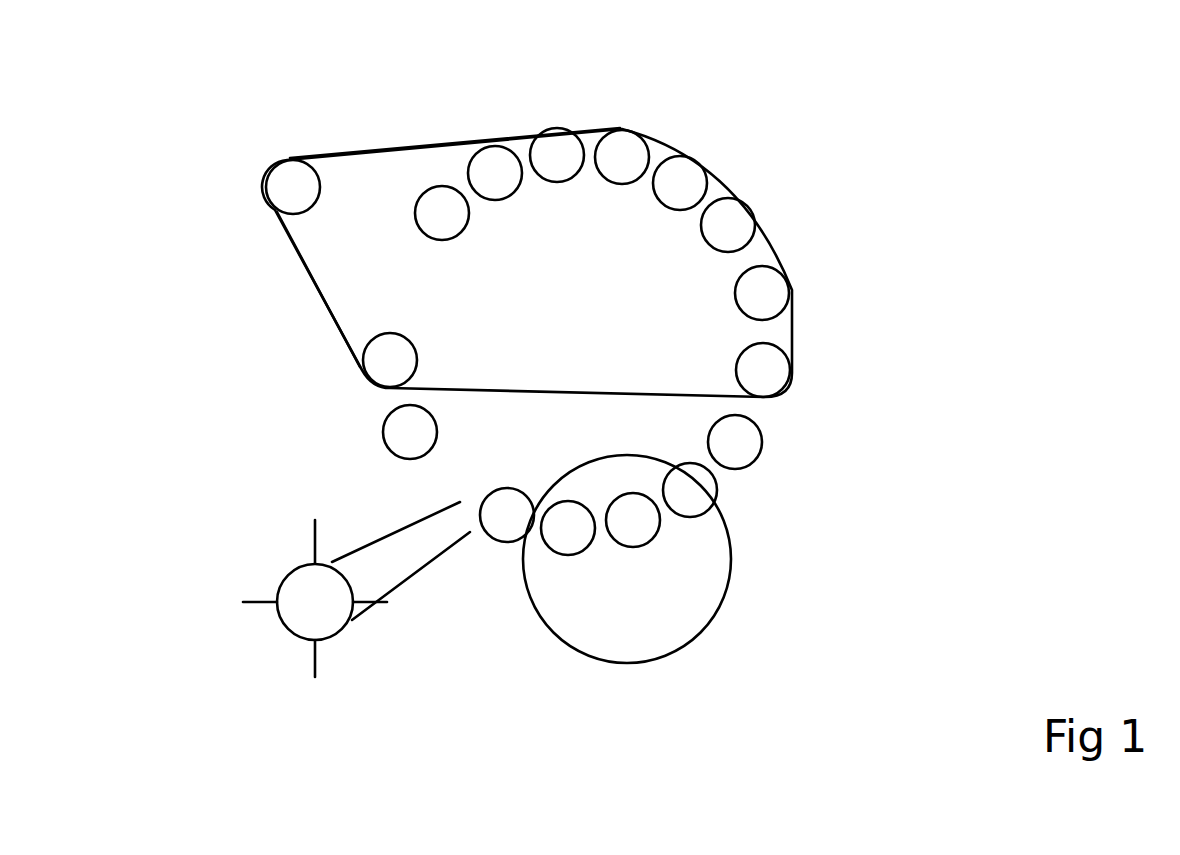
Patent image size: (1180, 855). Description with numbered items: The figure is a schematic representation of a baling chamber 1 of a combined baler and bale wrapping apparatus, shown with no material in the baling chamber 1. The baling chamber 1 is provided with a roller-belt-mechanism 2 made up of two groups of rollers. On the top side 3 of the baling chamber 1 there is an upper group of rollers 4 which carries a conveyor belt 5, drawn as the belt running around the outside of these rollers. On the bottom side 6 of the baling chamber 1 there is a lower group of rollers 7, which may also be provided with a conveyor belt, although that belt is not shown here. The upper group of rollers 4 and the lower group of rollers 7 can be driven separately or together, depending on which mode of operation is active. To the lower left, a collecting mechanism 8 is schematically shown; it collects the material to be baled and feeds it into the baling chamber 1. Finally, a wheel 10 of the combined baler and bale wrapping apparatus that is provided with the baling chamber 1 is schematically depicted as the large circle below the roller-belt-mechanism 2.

The baling chamber 1 is at (825, 161).
The roller-belt-mechanism 2 is at (770, 330).
The top side 3 is at (458, 145).
The upper group of rollers 4 is at (628, 147).
The conveyor belt 5 is at (308, 275).
The bottom side 6 is at (728, 483).
The lower group of rollers 7 is at (506, 530).
The collecting mechanism 8 is at (293, 615).
The wheel 10 is at (692, 625).